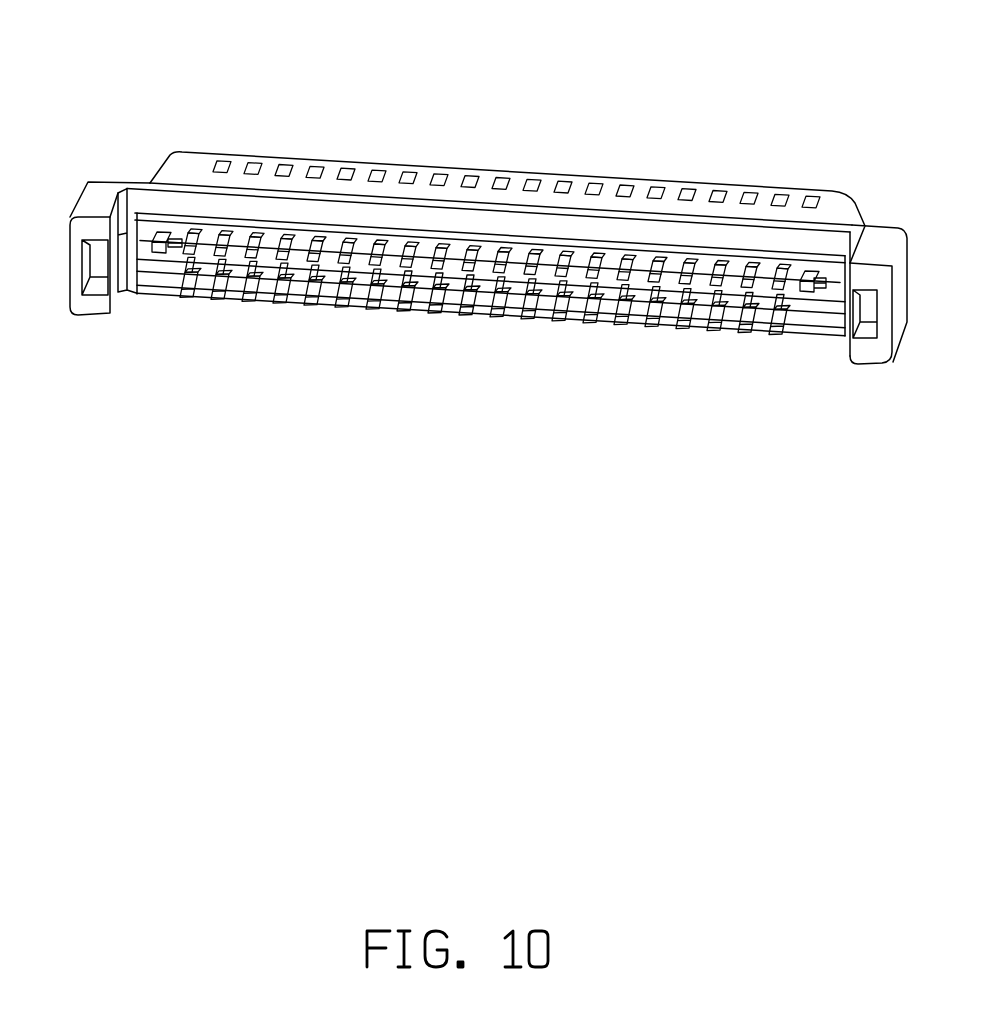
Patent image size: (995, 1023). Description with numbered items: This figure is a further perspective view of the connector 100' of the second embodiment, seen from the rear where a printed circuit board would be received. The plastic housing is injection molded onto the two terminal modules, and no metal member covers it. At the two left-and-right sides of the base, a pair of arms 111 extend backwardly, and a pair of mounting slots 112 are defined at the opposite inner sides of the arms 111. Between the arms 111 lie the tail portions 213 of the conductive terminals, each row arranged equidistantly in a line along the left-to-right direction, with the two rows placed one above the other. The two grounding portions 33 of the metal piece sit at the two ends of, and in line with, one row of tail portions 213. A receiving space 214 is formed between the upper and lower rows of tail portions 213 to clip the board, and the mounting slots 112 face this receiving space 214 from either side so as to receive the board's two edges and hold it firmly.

The connector 100' is at (512, 228).
The arms 111 is at (97, 203).
The mounting slots 112 is at (107, 257).
The tail portions 213 is at (717, 288).
The receiving space 214 is at (243, 267).
The grounding portions 33 is at (800, 287).